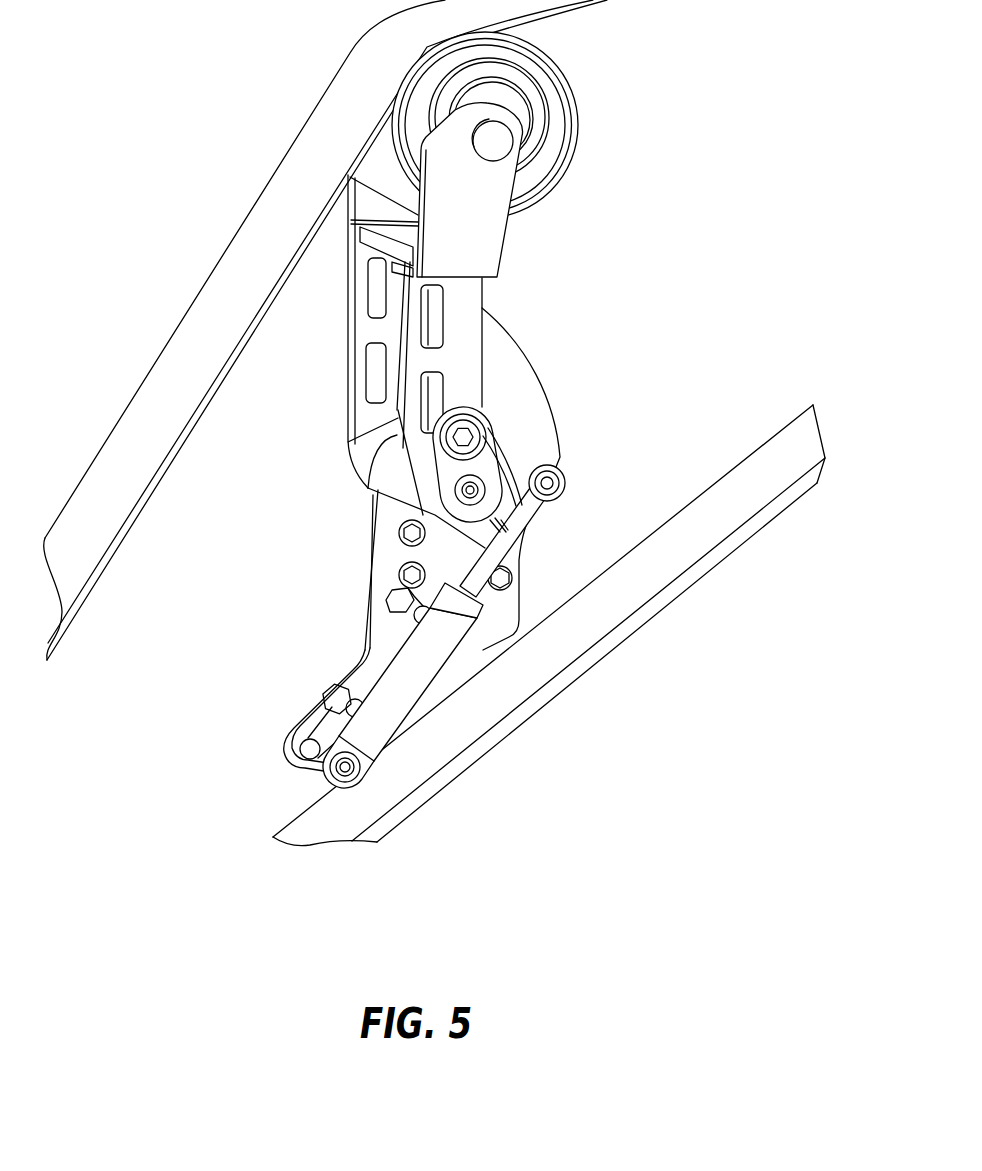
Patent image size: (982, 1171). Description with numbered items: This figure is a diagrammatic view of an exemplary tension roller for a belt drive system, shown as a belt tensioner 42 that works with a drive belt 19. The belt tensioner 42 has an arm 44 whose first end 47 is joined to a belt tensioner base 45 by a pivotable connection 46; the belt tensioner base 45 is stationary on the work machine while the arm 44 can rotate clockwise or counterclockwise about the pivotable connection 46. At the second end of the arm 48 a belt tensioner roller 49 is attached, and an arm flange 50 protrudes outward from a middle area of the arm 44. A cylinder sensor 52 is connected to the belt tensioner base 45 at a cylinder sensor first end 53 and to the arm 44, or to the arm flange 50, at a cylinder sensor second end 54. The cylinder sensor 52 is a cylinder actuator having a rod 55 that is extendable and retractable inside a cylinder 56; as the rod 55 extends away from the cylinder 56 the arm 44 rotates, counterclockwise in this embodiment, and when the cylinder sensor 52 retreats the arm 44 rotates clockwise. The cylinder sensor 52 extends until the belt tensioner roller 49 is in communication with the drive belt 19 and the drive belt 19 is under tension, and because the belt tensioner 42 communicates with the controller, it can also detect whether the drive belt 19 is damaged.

The drive belt 19 is at (232, 277).
The belt tensioner 42 is at (605, 363).
The arm 44 is at (367, 333).
The belt tensioner base 45 is at (380, 597).
The pivotable connection 46 is at (383, 470).
The first end 47 is at (355, 455).
The second end of the arm 48 is at (467, 261).
The belt tensioner roller 49 is at (565, 110).
The arm flange 50 is at (500, 354).
The cylinder sensor 52 is at (453, 627).
The cylinder sensor first end 53 is at (315, 767).
The cylinder sensor second end 54 is at (565, 474).
The rod 55 is at (507, 537).
The cylinder 56 is at (377, 735).